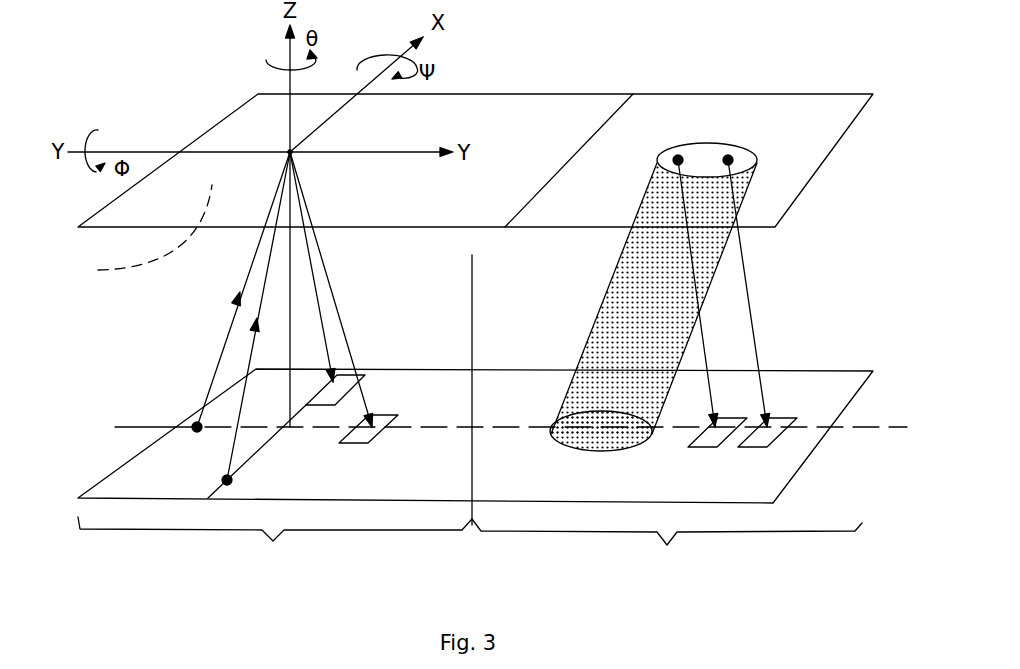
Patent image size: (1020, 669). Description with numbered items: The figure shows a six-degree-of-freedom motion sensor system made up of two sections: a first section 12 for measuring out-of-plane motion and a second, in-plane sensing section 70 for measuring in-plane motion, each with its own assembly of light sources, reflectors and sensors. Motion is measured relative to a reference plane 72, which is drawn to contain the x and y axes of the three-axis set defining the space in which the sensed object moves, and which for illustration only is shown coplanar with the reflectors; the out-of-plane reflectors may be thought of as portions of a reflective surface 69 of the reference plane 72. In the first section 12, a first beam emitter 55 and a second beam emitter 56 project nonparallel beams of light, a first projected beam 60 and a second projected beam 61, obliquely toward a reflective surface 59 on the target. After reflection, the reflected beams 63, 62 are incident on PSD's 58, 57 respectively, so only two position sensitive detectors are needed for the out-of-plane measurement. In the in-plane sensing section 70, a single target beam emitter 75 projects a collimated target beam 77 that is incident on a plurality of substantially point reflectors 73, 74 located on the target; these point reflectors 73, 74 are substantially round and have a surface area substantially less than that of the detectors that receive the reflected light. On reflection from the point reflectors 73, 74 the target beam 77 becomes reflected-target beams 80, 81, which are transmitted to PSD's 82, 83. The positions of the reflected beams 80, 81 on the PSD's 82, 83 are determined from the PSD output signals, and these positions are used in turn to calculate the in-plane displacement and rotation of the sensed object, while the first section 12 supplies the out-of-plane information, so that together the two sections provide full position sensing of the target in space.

The first section 12 is at (275, 546).
The first beam emitter 55 is at (192, 422).
The second beam emitter 56 is at (223, 476).
The PSD 57 is at (360, 376).
The PSD 58 is at (350, 447).
The reflective surface 59 is at (288, 150).
The first projected beam 60 is at (225, 355).
The second projected beam 61 is at (242, 412).
The reflected beam 62 is at (324, 317).
The reflected beam 63 is at (340, 317).
The reflective surface 69 is at (138, 235).
The in-plane sensing section 70 is at (667, 549).
The reference plane 72 is at (823, 165).
The point reflector 73 is at (676, 158).
The point reflector 74 is at (731, 158).
The target beam emitter 75 is at (577, 408).
The target beam 77 is at (632, 297).
The reflected-target beam 80 is at (753, 312).
The reflected-target beam 81 is at (710, 345).
The PSD 82 is at (755, 449).
The PSD 83 is at (703, 449).